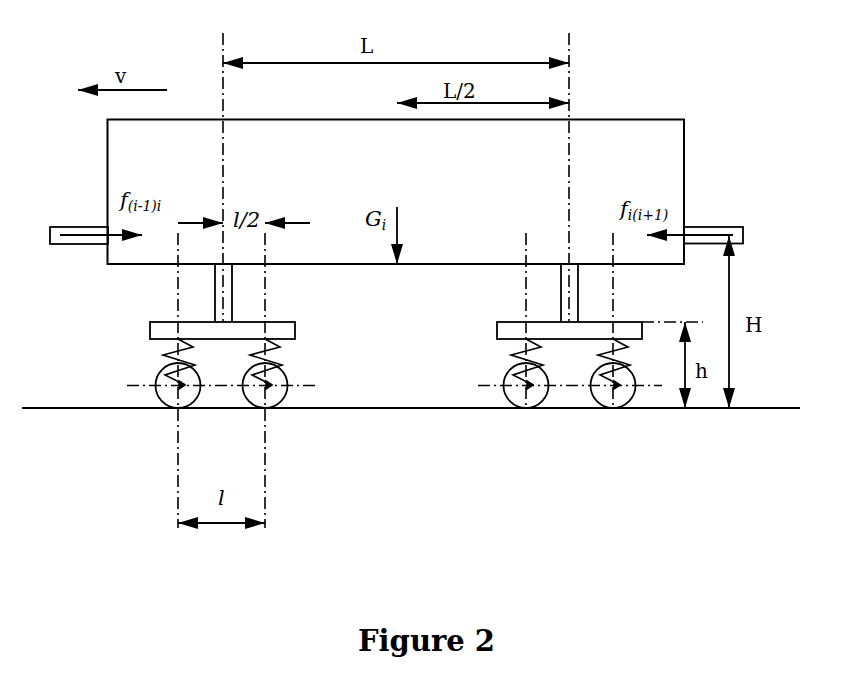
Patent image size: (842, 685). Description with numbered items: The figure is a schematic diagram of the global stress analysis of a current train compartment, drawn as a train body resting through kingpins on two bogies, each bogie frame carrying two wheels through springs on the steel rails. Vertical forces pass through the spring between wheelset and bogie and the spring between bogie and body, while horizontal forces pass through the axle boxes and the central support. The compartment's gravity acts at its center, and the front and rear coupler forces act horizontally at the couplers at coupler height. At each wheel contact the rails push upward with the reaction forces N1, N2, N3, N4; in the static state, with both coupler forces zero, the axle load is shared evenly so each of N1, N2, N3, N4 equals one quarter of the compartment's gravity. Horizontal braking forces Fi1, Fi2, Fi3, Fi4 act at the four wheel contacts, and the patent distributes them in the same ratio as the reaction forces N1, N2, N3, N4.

The reaction force of steel rails on first wheel N1 is at (178, 408).
The reaction force of steel rails on second wheel N2 is at (265, 408).
The reaction force of steel rails on third wheel N3 is at (526, 408).
The reaction force of steel rails on fourth wheel N4 is at (613, 408).
The braking force on first wheel Fi1 is at (227, 408).
The braking force on second wheel Fi2 is at (265, 408).
The braking force on third wheel Fi3 is at (526, 408).
The braking force on fourth wheel Fi4 is at (613, 408).